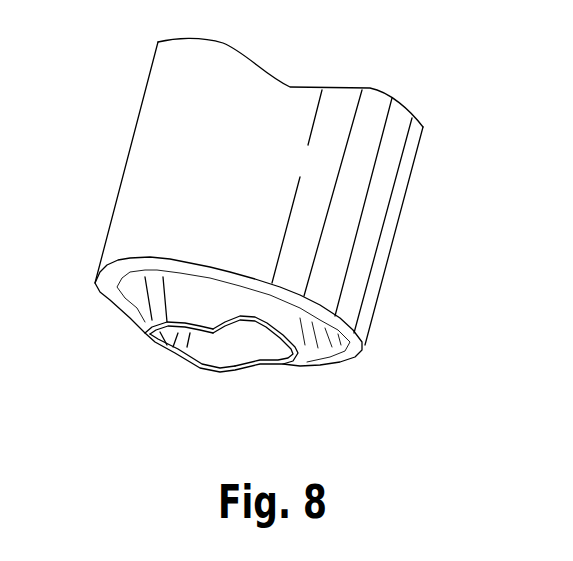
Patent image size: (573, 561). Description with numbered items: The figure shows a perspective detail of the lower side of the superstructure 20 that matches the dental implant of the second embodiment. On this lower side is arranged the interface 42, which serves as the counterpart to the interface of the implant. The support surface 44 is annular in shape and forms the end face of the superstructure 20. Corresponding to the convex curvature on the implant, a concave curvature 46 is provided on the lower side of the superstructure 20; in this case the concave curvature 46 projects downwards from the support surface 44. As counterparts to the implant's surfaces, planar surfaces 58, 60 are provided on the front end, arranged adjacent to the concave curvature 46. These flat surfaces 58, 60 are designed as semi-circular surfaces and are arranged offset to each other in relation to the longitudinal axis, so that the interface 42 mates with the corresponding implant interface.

The superstructure 20 is at (292, 191).
The interface 42 is at (203, 336).
The support surface 44 is at (348, 348).
The concave curvature 46 is at (125, 237).
The planar surface 58 is at (269, 381).
The planar surface 60 is at (189, 381).